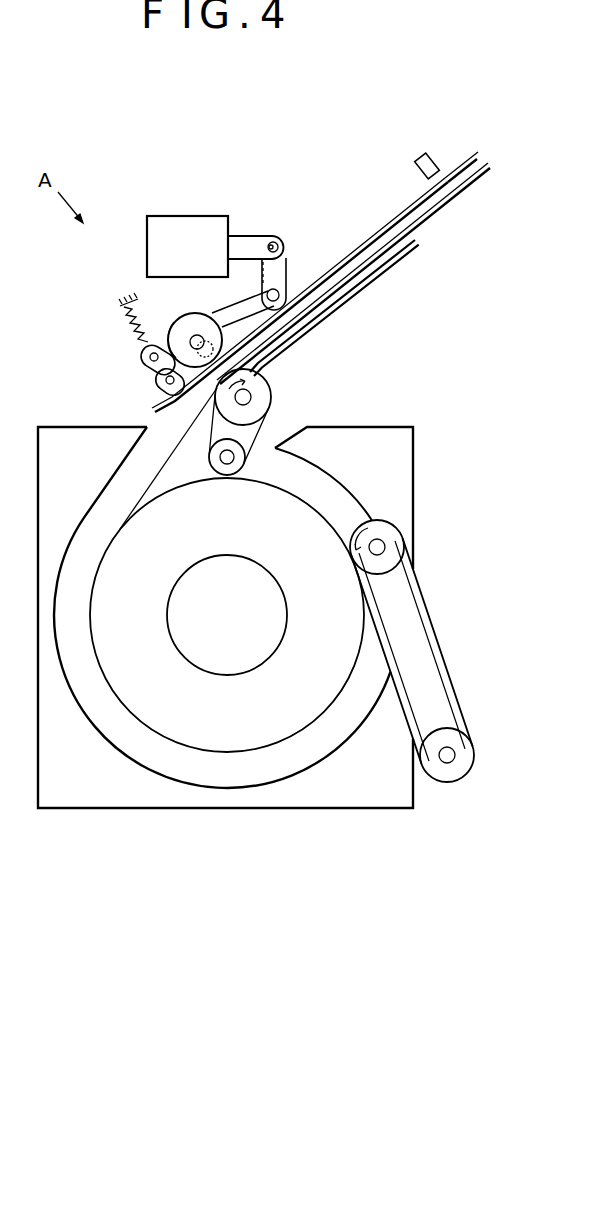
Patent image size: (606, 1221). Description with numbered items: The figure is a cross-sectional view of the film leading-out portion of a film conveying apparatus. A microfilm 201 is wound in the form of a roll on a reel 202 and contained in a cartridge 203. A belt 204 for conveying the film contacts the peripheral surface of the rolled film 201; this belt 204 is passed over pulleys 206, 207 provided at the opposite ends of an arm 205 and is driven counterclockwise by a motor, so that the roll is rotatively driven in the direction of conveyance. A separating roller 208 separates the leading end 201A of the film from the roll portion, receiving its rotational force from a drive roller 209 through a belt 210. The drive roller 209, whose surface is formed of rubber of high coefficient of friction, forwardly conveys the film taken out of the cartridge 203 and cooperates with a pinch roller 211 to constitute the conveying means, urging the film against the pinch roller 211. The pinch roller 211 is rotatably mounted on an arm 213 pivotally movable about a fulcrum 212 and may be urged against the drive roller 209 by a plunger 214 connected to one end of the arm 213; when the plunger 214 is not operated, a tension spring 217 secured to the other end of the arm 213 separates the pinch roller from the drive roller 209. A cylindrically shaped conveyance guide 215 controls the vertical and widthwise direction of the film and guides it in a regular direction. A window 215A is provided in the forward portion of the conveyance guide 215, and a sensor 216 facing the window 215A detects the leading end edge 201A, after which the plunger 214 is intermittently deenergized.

The microfilm 201 is at (262, 752).
The leading end edge of the film 201A is at (362, 274).
The reel 202 is at (220, 674).
The cartridge 203 is at (407, 461).
The belt 204 is at (440, 647).
The arm 205 is at (430, 703).
The pulley 206 is at (393, 538).
The pulley 207 is at (462, 767).
The separating roller 208 is at (255, 472).
The drive roller 209 is at (272, 397).
The belt 210 is at (248, 450).
The pinch roller 211 is at (162, 331).
The fulcrum 212 is at (288, 280).
The arm 213 is at (222, 310).
The plunger 214 is at (168, 227).
The conveyance guide 215 is at (287, 345).
The window 215A is at (450, 174).
The sensor 216 is at (428, 153).
The tension spring 217 is at (147, 344).